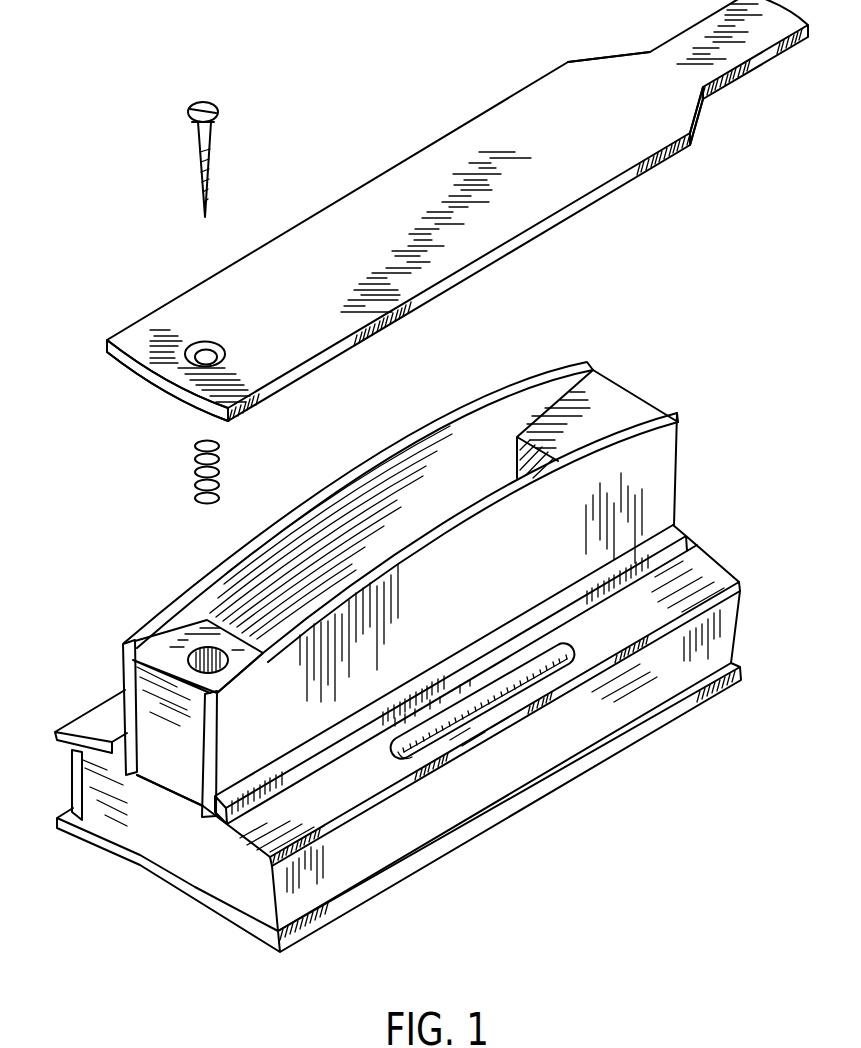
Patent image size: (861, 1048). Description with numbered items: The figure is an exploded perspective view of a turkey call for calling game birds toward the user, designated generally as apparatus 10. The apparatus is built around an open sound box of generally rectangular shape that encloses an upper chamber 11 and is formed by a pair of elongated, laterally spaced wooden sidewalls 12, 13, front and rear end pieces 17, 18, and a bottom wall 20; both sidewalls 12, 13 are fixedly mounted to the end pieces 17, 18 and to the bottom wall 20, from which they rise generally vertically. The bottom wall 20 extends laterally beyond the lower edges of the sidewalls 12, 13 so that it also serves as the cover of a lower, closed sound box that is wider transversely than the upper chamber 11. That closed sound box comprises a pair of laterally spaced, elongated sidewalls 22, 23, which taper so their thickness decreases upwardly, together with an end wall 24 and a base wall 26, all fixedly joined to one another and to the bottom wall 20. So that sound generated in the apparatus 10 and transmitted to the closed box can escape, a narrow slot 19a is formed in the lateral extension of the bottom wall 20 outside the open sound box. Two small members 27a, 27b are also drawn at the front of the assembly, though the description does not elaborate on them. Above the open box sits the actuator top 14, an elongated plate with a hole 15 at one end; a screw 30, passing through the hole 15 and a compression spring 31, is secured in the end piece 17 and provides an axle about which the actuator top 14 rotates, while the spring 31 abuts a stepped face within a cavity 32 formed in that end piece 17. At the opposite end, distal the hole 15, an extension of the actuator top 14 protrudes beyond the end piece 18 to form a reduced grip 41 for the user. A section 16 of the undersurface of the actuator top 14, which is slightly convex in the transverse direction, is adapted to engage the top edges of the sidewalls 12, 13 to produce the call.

The apparatus 10 is at (631, 827).
The upper chamber 11 is at (386, 666).
The sidewall 12 is at (660, 487).
The sidewall 13 is at (367, 461).
The actuator top 14 is at (480, 263).
The hole 15 is at (222, 346).
The section of the undersurface 16 is at (152, 388).
The front end piece 17 is at (150, 733).
The rear end piece 18 is at (610, 413).
The narrow slot 19a is at (515, 688).
The bottom wall 20 is at (708, 578).
The sidewall 22 is at (60, 777).
The sidewall 23 is at (422, 817).
The end wall 24 is at (243, 883).
The base wall 26 is at (410, 873).
The rail 27a is at (130, 773).
The rail 27b is at (213, 694).
The screw 30 is at (212, 130).
The compression spring 31 is at (193, 483).
The cavity 32 is at (192, 653).
The reduced grip 41 is at (762, 42).